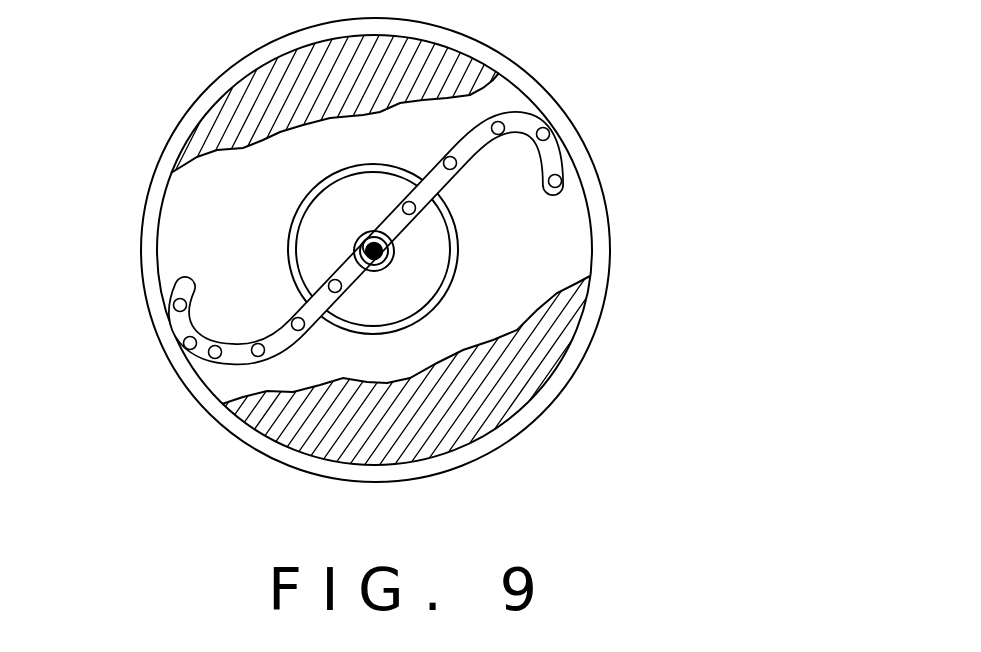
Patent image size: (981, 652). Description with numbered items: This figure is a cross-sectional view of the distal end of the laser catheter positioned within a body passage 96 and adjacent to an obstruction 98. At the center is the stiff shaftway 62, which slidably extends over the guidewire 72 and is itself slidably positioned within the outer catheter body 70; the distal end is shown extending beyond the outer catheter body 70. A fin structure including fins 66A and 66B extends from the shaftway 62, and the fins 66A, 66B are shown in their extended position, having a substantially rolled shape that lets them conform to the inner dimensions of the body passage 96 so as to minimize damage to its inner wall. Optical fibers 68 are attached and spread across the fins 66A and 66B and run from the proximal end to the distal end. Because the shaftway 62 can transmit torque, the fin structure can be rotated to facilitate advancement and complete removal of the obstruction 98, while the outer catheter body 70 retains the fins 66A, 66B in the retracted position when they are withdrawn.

The stiff shaftway 62 is at (374, 251).
The fin 66A is at (230, 363).
The fin 66B is at (515, 120).
The optical fibers 68 is at (556, 183).
The outer catheter body 70 is at (458, 230).
The guidewire 72 is at (374, 251).
The body passage 96 is at (235, 228).
The obstruction 98 is at (433, 407).